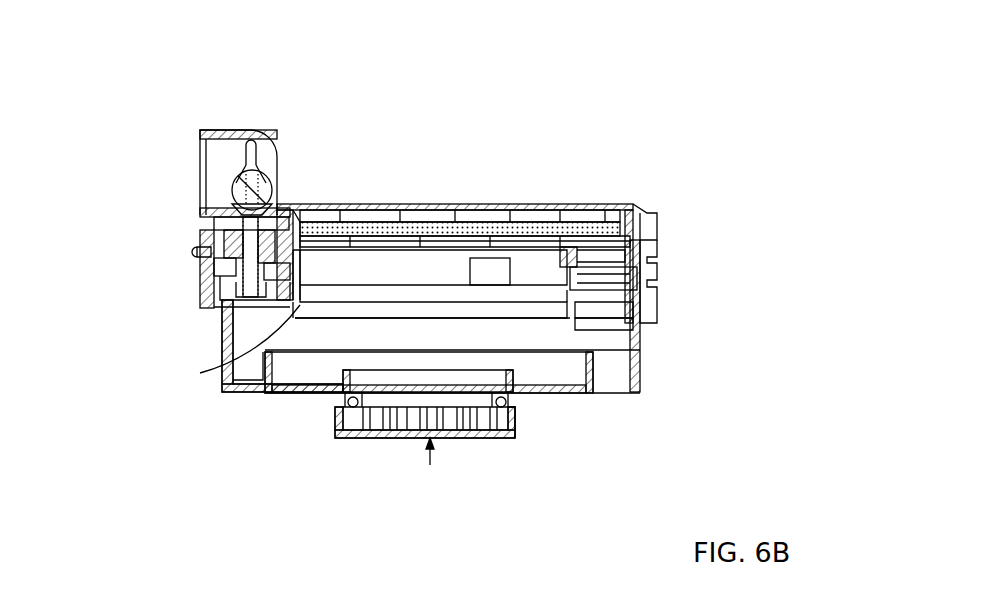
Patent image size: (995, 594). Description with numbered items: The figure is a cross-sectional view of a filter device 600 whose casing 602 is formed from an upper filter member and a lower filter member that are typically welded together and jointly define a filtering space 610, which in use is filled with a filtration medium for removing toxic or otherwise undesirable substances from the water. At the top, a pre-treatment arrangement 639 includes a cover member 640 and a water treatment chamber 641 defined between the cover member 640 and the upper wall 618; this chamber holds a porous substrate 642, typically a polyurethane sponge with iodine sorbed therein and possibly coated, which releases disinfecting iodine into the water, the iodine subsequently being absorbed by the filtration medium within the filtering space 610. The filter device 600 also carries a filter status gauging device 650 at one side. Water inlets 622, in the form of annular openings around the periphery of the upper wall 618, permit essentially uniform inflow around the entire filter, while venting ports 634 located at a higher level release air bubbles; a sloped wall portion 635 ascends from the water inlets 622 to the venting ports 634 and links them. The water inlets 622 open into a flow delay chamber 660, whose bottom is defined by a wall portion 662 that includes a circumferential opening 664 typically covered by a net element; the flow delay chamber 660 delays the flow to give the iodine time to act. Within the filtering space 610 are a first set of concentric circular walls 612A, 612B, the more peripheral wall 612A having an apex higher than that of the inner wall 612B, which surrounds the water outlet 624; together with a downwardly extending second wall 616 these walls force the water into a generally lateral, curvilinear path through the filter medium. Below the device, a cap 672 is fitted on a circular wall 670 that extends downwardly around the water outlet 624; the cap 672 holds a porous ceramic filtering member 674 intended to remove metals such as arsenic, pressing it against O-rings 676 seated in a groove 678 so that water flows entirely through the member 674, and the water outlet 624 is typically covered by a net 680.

The filter device 600 is at (668, 86).
The casing 602 is at (212, 342).
The filtering space 610 is at (640, 380).
The first wall 612A is at (597, 368).
The first wall 612B is at (518, 392).
The second wall 616 is at (232, 366).
The upper wall 618 is at (348, 204).
The water inlets 622 is at (604, 210).
The water outlet 624 is at (393, 382).
The venting ports 634 is at (587, 210).
The wall portion 635 is at (657, 273).
The pre-treatment arrangement 639 is at (402, 200).
The cover member 640 is at (637, 204).
The water treatment chamber 641 is at (508, 204).
The porous substrate 642 is at (452, 204).
The filter status gauging device 650 is at (198, 178).
The flow delay chamber 660 is at (648, 286).
The wall portion 662 is at (640, 322).
The circumferential opening 664 is at (640, 332).
The circular wall 670 is at (335, 432).
The cap 672 is at (430, 465).
The ceramic filtering member 674 is at (470, 430).
The O-rings 676 is at (508, 425).
The groove 678 is at (338, 404).
The net 680 is at (398, 436).